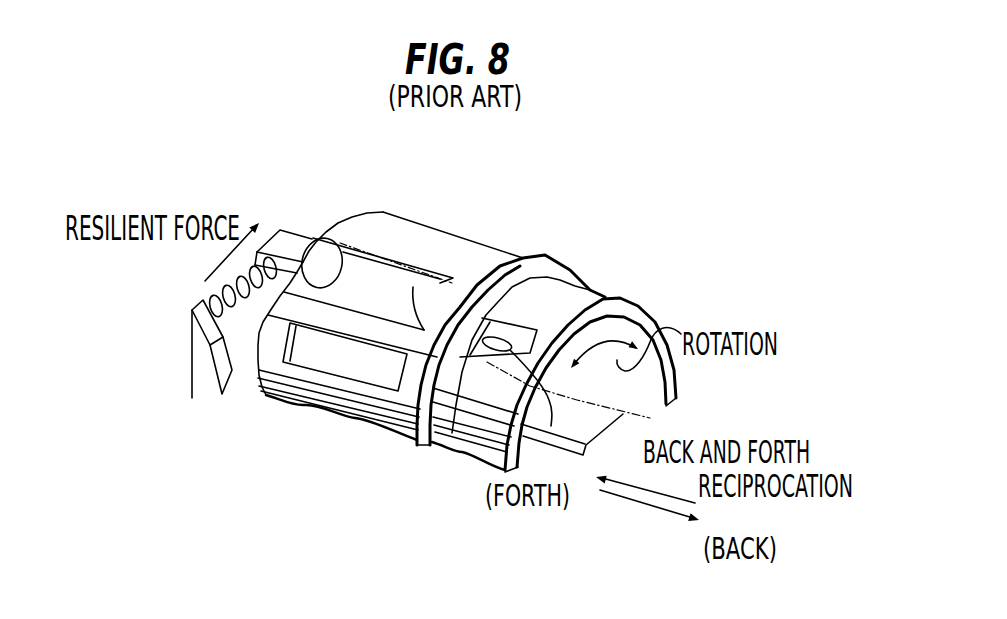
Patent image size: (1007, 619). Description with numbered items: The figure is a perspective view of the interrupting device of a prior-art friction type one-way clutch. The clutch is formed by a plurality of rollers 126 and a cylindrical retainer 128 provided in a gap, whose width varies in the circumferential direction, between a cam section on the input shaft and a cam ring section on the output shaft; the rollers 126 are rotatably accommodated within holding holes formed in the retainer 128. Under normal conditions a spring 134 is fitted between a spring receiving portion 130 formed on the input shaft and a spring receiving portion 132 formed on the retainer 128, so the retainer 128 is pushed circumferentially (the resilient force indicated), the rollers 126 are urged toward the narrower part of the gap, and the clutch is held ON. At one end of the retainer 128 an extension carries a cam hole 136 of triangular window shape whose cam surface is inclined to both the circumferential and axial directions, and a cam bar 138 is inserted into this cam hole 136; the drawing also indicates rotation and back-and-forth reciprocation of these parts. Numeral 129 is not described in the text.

The rollers 126 is at (408, 262).
The cylindrical retainer 128 is at (312, 412).
The rectangular slot 129 is at (359, 373).
The spring receiving portion 130 is at (192, 372).
The spring receiving portion 132 is at (296, 232).
The spring 134 is at (214, 293).
The cam hole 136 is at (453, 432).
The cam bar 138 is at (641, 410).